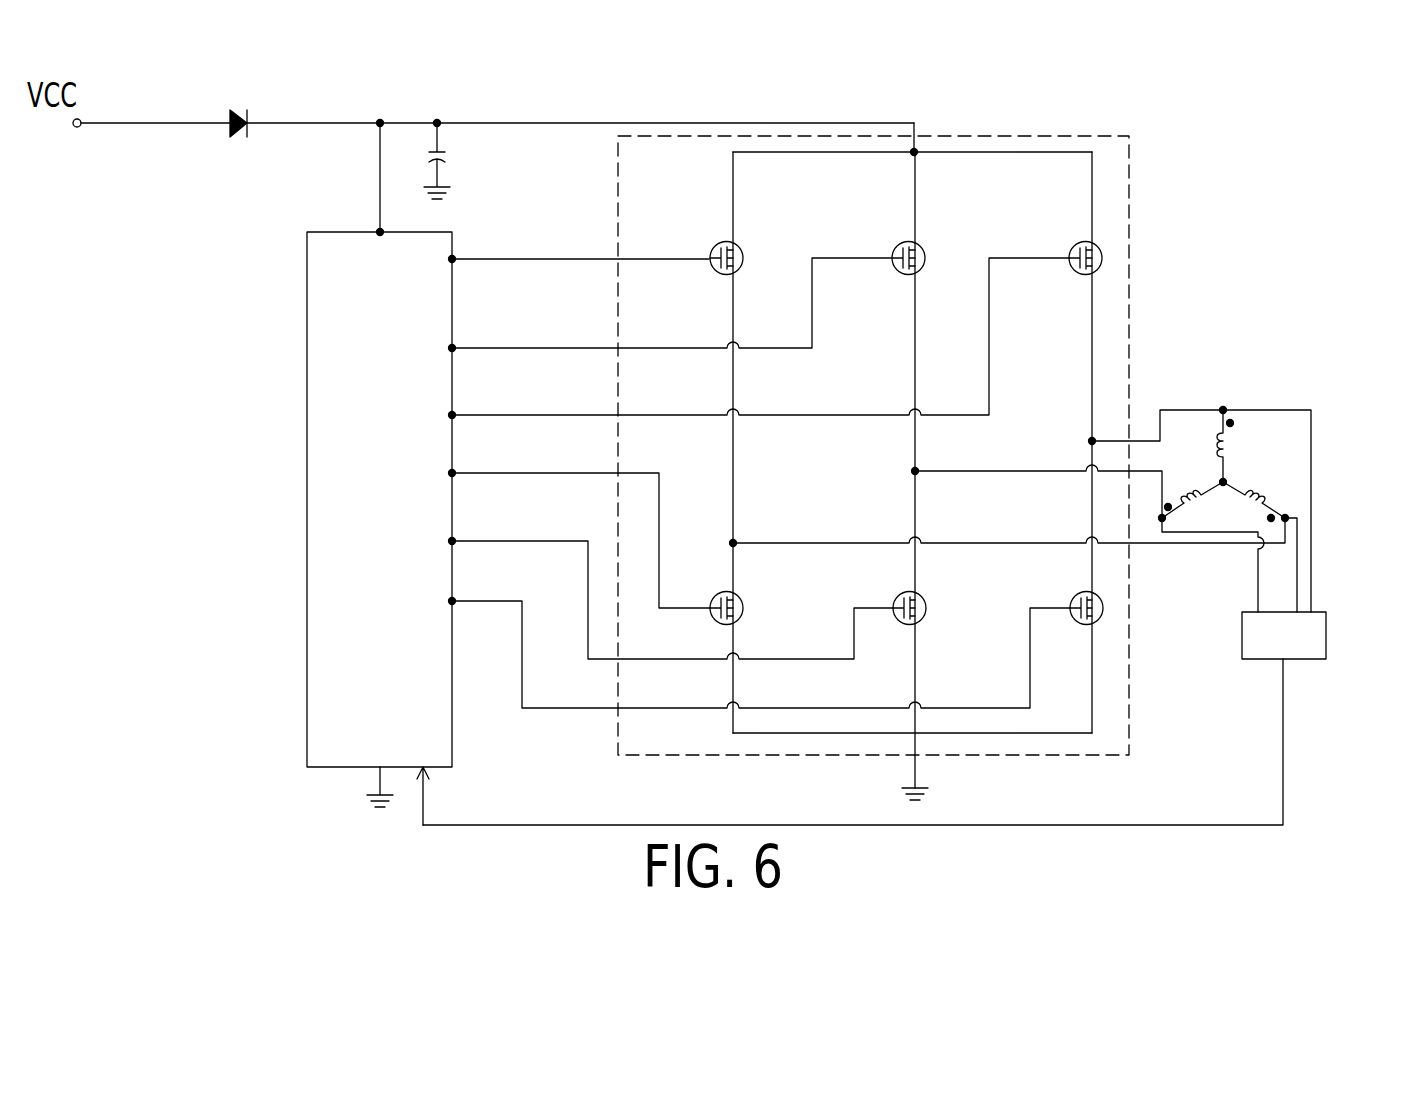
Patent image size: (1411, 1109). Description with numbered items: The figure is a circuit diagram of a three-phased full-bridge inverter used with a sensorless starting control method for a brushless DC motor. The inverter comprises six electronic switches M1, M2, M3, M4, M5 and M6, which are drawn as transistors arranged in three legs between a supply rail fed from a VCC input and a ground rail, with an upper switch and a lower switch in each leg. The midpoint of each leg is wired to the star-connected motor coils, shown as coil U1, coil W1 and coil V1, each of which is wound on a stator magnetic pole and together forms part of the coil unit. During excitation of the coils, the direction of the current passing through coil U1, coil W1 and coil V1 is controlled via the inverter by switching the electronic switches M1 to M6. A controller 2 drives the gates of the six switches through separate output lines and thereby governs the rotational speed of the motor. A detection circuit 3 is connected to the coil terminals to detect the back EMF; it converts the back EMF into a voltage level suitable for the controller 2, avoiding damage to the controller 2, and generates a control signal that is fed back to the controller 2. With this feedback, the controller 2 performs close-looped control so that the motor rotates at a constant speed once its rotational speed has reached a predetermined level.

The controller 2 is at (315, 637).
The detection circuit 3 is at (1300, 659).
The electronic switch M1 is at (713, 274).
The electronic switch M2 is at (1074, 622).
The electronic switch M3 is at (895, 274).
The electronic switch M4 is at (710, 622).
The electronic switch M5 is at (1071, 274).
The electronic switch M6 is at (897, 622).
The coil U1 is at (1228, 448).
The coil W1 is at (1192, 493).
The coil V1 is at (1258, 495).